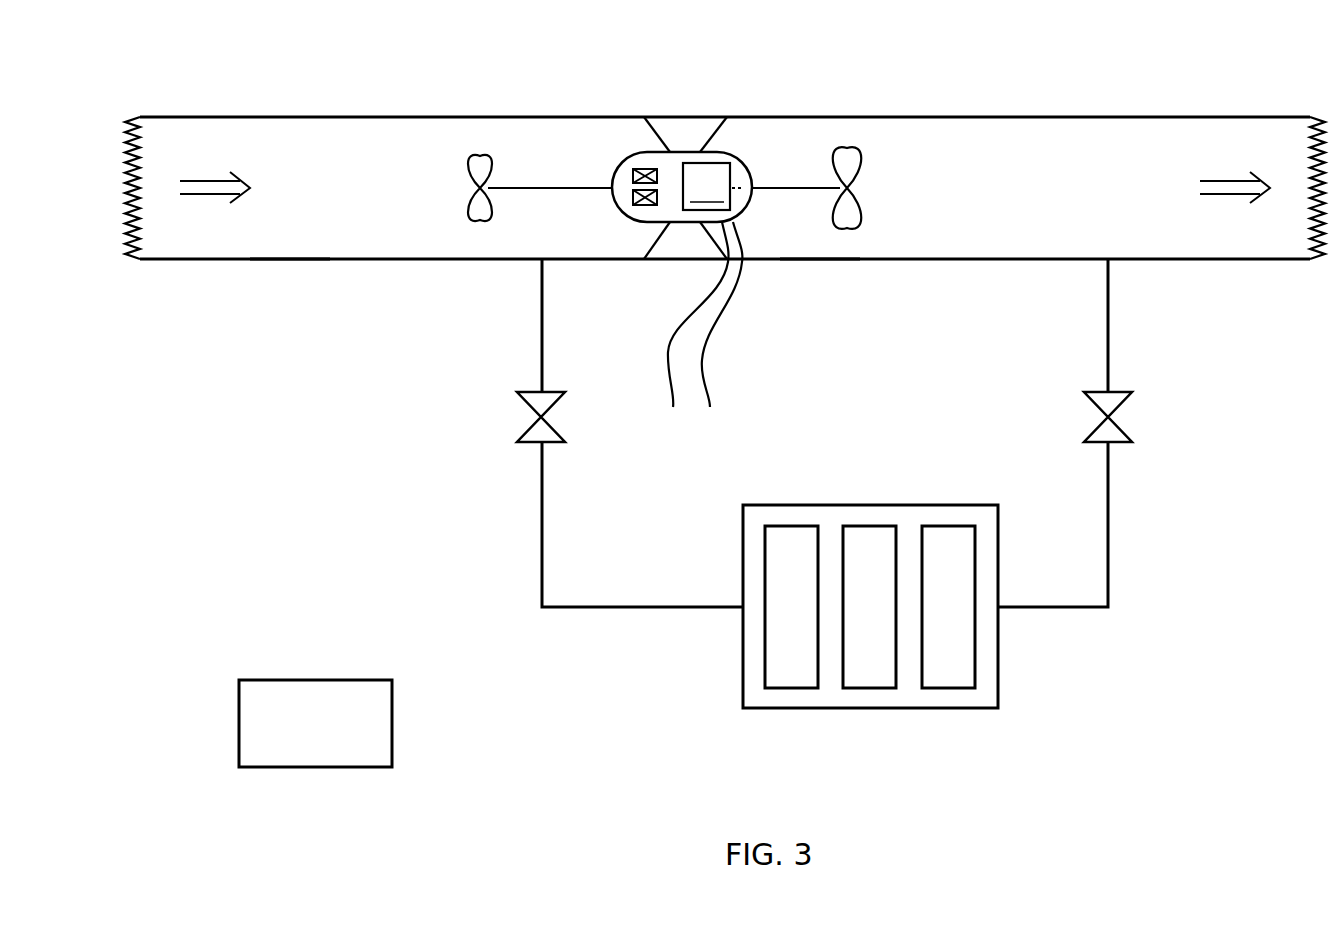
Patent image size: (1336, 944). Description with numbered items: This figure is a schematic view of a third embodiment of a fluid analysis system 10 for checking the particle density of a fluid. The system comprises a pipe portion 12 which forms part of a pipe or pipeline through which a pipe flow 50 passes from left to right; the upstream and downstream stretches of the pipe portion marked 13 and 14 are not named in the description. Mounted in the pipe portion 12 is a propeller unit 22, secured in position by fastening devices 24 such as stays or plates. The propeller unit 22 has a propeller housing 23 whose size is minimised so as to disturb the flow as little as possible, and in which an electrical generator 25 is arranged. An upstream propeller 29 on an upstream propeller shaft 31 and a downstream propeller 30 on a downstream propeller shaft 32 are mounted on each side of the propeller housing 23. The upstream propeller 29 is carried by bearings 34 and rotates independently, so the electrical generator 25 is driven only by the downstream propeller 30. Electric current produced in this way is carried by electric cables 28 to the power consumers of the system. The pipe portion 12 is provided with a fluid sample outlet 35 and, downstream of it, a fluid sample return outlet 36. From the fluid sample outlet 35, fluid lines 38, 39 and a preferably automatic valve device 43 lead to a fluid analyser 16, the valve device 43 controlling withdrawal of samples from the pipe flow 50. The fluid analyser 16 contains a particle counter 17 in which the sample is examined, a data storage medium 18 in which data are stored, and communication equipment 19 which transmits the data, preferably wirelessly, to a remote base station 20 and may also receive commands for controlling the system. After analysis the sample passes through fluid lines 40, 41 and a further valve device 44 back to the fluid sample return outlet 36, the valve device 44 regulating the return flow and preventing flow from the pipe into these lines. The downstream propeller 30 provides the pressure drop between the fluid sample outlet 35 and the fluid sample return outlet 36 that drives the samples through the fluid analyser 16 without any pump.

The fluid analysis system 10 is at (275, 478).
The pipe portion 12 is at (707, 92).
The upstream duct section 13 is at (303, 277).
The downstream duct section 14 is at (812, 277).
The fluid analyser 16 is at (797, 710).
The particle counter 17 is at (792, 525).
The data storage medium 18 is at (870, 525).
The communication equipment 19 is at (950, 525).
The base station 20 is at (393, 728).
The propeller unit 22 is at (910, 168).
The propeller housing 23 is at (750, 215).
The fastening devices 24 is at (668, 128).
The electrical generator 25 is at (712, 186).
The electric cables 28 is at (700, 375).
The upstream propeller 29 is at (470, 162).
The downstream propeller 30 is at (863, 215).
The upstream propeller shaft 31 is at (545, 188).
The downstream propeller shaft 32 is at (780, 188).
The bearings 34 is at (633, 200).
The fluid sample outlet 35 is at (545, 262).
The fluid sample return outlet 36 is at (1112, 262).
The fluid line 38 is at (543, 355).
The fluid line 39 is at (545, 552).
The fluid line 40 is at (1106, 530).
The fluid line 41 is at (1106, 352).
The valve device 43 is at (520, 430).
The valve device 44 is at (1128, 432).
The pipe flow 50 is at (215, 196).